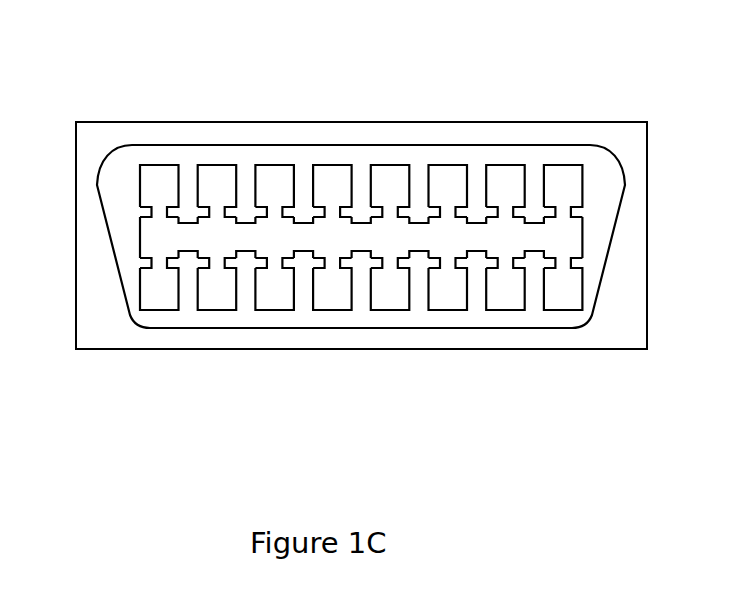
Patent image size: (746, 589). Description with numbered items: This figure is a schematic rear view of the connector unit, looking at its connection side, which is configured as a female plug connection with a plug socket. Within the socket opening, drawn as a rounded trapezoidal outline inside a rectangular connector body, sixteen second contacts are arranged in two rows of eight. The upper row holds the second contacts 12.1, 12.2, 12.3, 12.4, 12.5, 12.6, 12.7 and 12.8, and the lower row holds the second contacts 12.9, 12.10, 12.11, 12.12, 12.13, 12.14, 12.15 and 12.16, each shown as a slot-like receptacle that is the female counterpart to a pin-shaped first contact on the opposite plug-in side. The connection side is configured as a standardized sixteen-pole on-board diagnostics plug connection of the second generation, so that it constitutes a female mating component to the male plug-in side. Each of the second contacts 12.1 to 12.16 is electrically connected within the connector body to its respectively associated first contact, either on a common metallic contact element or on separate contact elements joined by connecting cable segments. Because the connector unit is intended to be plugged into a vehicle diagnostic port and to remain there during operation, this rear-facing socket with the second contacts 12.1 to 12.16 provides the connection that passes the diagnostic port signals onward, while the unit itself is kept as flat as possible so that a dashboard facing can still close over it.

The second contact 12.1 is at (159, 178).
The second contact 12.2 is at (217, 178).
The second contact 12.3 is at (275, 178).
The second contact 12.4 is at (332, 178).
The second contact 12.5 is at (390, 178).
The second contact 12.6 is at (448, 178).
The second contact 12.7 is at (505, 178).
The second contact 12.8 is at (563, 178).
The second contact 12.9 is at (165, 280).
The second contact 12.10 is at (225, 280).
The second contact 12.11 is at (267, 280).
The second contact 12.12 is at (327, 280).
The second contact 12.13 is at (386, 280).
The second contact 12.14 is at (435, 280).
The second contact 12.15 is at (490, 280).
The second contact 12.16 is at (550, 272).